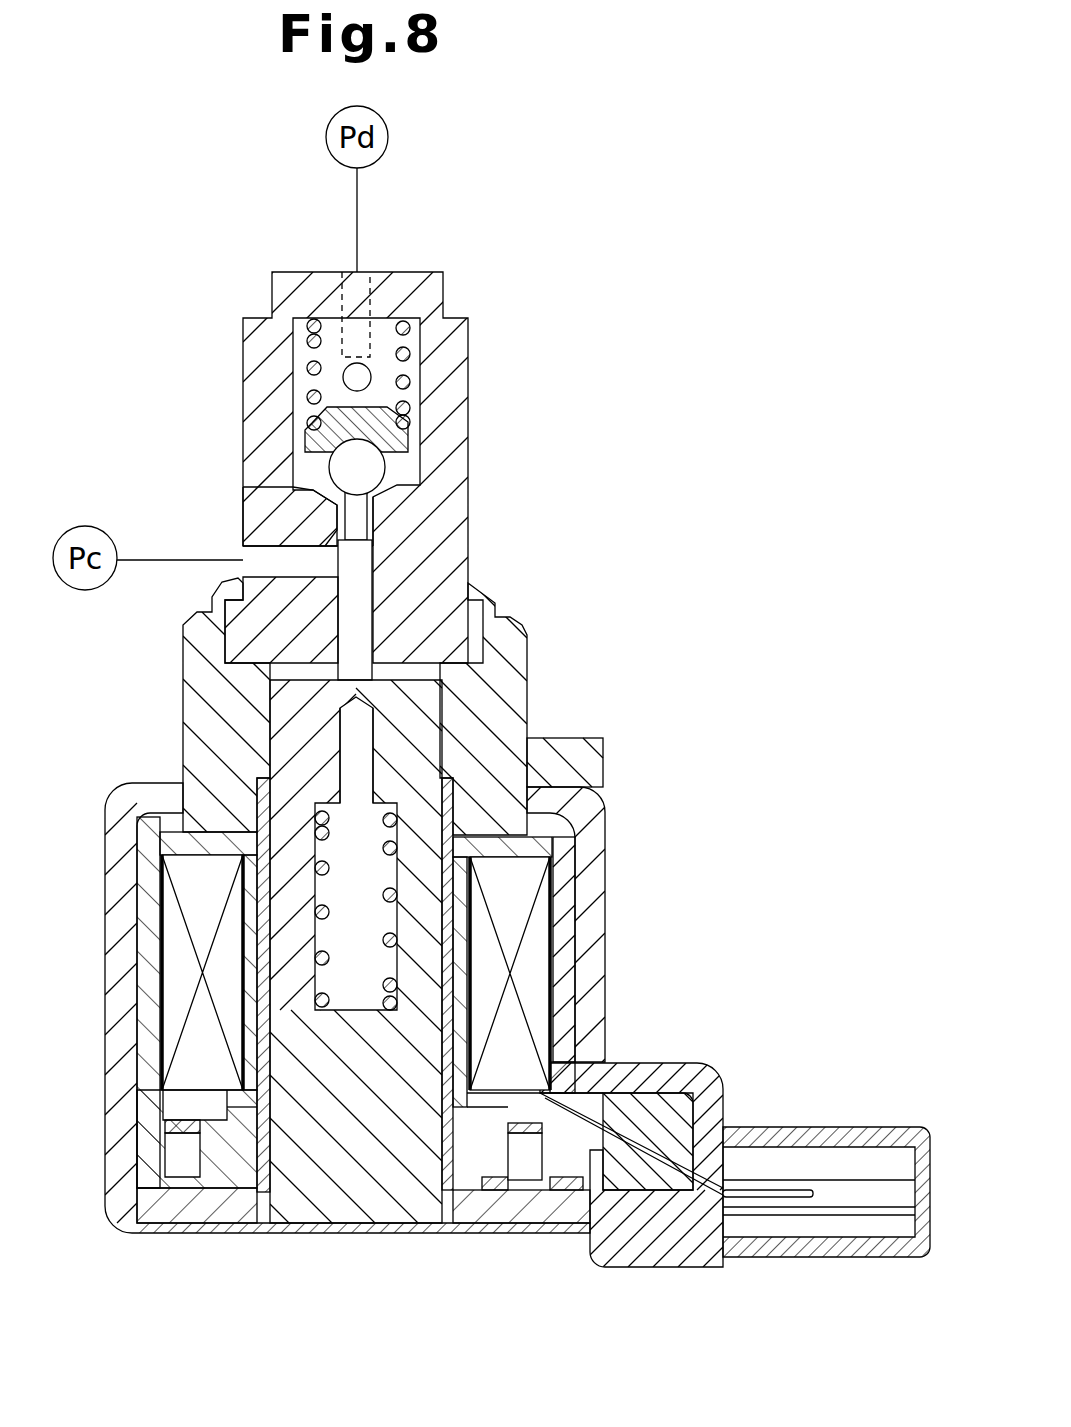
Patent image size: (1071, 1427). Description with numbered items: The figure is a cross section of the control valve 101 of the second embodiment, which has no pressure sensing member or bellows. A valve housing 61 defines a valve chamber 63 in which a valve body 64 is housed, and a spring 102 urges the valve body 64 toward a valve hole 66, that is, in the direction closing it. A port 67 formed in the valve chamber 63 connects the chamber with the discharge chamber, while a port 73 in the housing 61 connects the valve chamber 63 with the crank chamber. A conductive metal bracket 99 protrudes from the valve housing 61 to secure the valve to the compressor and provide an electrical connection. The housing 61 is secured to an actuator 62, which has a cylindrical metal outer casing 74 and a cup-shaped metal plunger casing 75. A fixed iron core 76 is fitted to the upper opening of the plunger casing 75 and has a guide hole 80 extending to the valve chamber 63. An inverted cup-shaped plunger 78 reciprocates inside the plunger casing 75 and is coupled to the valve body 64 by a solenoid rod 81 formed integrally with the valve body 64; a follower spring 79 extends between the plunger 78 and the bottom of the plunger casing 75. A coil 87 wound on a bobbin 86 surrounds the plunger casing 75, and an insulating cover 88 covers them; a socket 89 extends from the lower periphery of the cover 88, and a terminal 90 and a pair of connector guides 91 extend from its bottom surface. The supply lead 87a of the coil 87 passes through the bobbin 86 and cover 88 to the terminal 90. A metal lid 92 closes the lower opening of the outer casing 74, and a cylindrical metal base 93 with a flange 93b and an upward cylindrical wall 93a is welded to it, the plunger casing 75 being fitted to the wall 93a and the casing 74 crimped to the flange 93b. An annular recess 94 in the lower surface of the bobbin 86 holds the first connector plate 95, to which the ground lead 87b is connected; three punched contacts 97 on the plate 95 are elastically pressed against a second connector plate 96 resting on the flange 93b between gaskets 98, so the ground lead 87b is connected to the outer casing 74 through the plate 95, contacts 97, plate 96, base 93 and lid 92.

The valve housing 61 is at (507, 617).
The actuator 62 is at (607, 845).
The valve chamber 63 is at (418, 386).
The valve body 64 is at (332, 468).
The valve hole 66 is at (376, 512).
The port 67 is at (364, 262).
The port 73 is at (241, 546).
The outer casing 74 is at (605, 915).
The plunger casing 75 is at (466, 873).
The fixed iron core 76 is at (357, 1222).
The plunger 78 is at (295, 688).
The follower spring 79 is at (325, 1010).
The guide hole 80 is at (373, 600).
The solenoid rod 81 is at (373, 655).
The bobbin 86 is at (247, 888).
The coil 87 is at (575, 983).
The supply lead 87a is at (600, 1090).
The ground lead 87b is at (502, 1118).
The insulating cover 88 is at (700, 1068).
The socket 89 is at (810, 1127).
The terminal 90 is at (803, 1210).
The connector guides 91 is at (840, 1194).
The lid 92 is at (272, 1224).
The base 93 is at (203, 1220).
The cylindrical wall 93a is at (247, 1132).
The flange 93b is at (135, 1220).
The annular recess 94 is at (198, 1133).
The first connector plate 95 is at (464, 1128).
The second connector plate 96 is at (520, 1193).
The contacts 97 is at (525, 1163).
The gaskets 98 is at (490, 1193).
The bracket 99 is at (572, 740).
The control valve 101 is at (470, 331).
The spring 102 is at (308, 326).